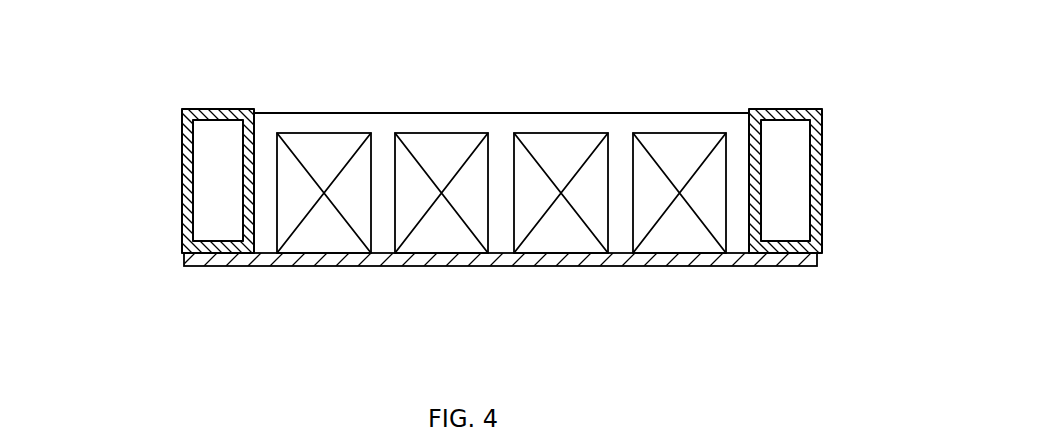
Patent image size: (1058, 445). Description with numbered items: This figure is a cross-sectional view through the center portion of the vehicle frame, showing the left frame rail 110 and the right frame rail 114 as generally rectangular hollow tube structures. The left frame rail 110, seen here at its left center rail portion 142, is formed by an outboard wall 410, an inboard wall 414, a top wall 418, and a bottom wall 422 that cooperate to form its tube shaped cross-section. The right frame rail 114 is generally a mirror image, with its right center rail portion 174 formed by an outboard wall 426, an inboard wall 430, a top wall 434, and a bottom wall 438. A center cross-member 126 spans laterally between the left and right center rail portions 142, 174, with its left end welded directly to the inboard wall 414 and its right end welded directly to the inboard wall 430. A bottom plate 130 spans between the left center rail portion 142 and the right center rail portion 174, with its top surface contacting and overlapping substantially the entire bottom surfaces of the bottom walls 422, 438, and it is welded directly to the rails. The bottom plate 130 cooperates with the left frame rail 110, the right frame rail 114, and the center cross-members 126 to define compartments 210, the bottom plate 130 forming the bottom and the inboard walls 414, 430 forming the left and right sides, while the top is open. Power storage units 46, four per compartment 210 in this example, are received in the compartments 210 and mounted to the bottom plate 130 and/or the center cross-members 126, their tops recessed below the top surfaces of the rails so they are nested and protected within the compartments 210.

The power storage unit 46 is at (325, 234).
The left frame rail 110 is at (182, 126).
The right frame rail 114 is at (822, 128).
The center cross-member 126 is at (380, 113).
The bottom plate 130 is at (507, 267).
The left center rail portion 142 is at (182, 152).
The right center rail portion 174 is at (822, 154).
The compartment 210 is at (265, 170).
The outboard wall 410 is at (182, 200).
The inboard wall 414 is at (246, 228).
The top wall 418 is at (215, 112).
The bottom wall 422 is at (217, 248).
The outboard wall 426 is at (822, 200).
The inboard wall 430 is at (760, 228).
The top wall 434 is at (787, 112).
The bottom wall 438 is at (787, 248).